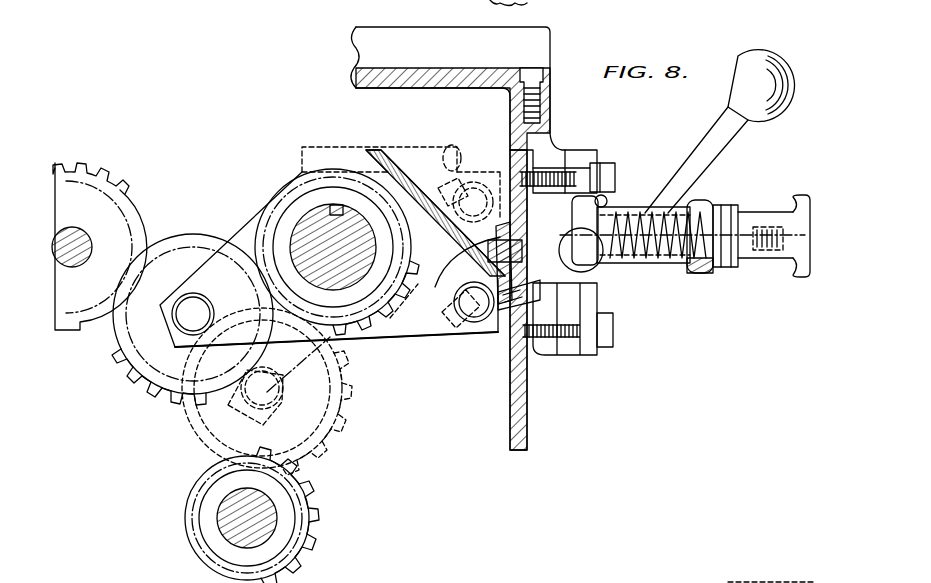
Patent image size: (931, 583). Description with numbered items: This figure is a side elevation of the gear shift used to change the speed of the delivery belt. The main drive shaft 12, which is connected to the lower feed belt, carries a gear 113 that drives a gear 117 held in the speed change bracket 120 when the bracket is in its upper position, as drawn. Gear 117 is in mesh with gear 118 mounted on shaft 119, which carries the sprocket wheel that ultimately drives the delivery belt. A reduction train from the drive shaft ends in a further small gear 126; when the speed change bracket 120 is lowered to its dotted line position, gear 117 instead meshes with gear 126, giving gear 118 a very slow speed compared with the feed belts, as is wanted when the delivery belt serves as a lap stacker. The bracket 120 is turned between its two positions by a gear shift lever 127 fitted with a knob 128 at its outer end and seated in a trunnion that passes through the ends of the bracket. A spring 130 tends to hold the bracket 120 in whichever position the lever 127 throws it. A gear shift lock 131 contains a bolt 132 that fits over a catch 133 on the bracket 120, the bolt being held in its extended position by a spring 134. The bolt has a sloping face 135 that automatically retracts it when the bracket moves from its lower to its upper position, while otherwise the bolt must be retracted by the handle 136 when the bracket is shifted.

The main drive shaft 12 is at (88, 238).
The gear 113 is at (128, 202).
The gear 117 is at (125, 352).
The gear 118 is at (358, 342).
The shaft 119 is at (322, 223).
The speed change bracket 120 is at (450, 333).
The small gear 126 is at (305, 493).
The gear shift lever 127 is at (730, 147).
The knob 128 is at (787, 72).
The spring 130 is at (575, 285).
The gear shift lock 131 is at (672, 265).
The bolt 132 is at (512, 229).
The catch 133 is at (455, 300).
The spring 134 is at (635, 213).
The sloping face 135 is at (452, 262).
The handle 136 is at (788, 262).